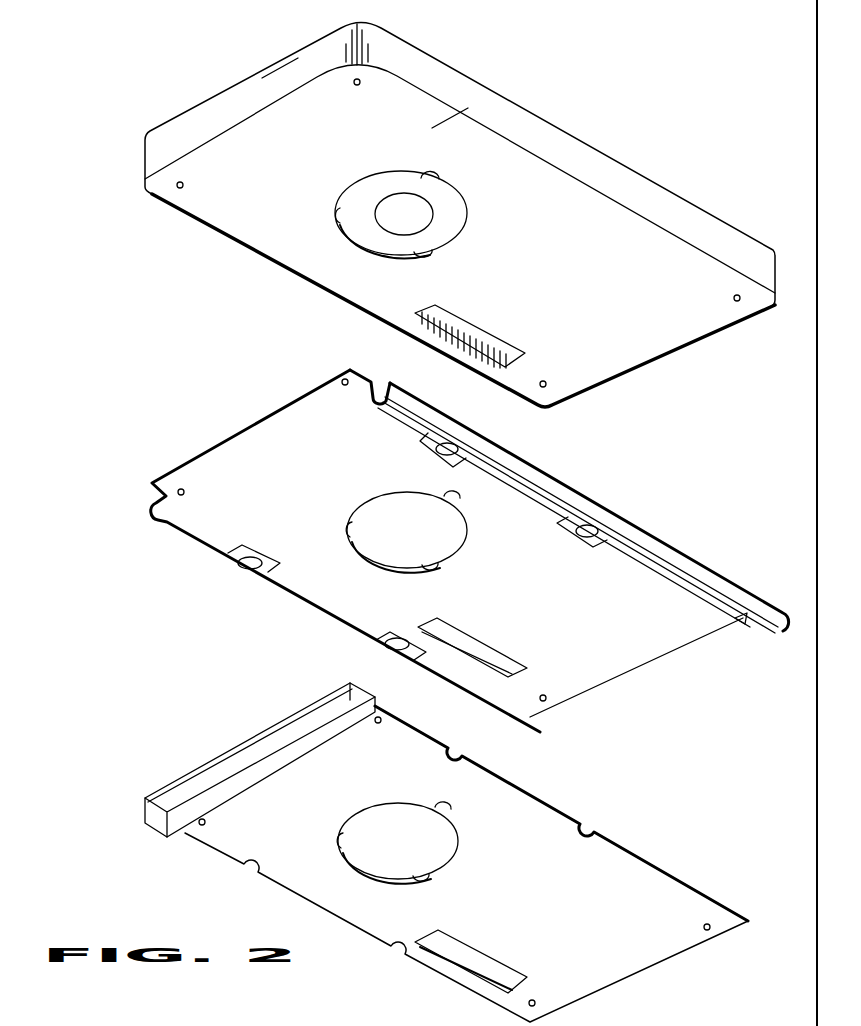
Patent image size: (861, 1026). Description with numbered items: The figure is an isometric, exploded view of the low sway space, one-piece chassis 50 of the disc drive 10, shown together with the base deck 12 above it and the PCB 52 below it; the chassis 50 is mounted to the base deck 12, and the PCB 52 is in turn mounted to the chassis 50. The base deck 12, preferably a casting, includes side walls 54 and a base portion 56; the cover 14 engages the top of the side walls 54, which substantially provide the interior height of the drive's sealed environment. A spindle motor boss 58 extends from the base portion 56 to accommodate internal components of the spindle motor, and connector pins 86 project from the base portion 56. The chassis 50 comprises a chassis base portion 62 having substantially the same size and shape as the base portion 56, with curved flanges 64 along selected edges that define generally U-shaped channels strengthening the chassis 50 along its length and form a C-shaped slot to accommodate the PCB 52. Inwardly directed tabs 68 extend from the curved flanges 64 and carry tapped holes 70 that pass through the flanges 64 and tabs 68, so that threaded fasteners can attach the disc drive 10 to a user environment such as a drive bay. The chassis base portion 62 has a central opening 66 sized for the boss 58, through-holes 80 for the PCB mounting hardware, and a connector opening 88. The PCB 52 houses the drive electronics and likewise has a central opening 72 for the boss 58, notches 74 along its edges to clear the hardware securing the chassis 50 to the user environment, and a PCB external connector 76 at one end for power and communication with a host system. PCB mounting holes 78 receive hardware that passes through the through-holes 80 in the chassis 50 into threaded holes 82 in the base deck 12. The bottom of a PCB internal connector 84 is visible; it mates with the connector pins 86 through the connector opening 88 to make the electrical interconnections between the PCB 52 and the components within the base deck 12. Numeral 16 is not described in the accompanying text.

The disc drive 10 is at (203, 48).
The base deck 12 is at (192, 126).
The cover 14 is at (318, 1025).
The spindle opening 16 is at (417, 218).
The one-piece chassis 50 is at (280, 442).
The PCB 52 is at (250, 826).
The side walls 54 is at (305, 60).
The base portion 56 is at (440, 118).
The spindle motor boss 58 is at (372, 236).
The chassis base portion 62 is at (649, 638).
The curved flanges 64 is at (560, 478).
The central opening 66 is at (440, 525).
The inwardly directed tabs 68 is at (437, 452).
The tapped holes 70 is at (460, 446).
The central opening 72 is at (432, 844).
The notches 74 is at (460, 756).
The PCB external connector 76 is at (265, 728).
The PCB mounting holes 78 is at (378, 724).
The through-holes 80 is at (343, 378).
The threaded holes 82 is at (355, 86).
The PCB internal connector 84 is at (462, 950).
The connector pins 86 is at (484, 322).
The connector opening 88 is at (470, 647).